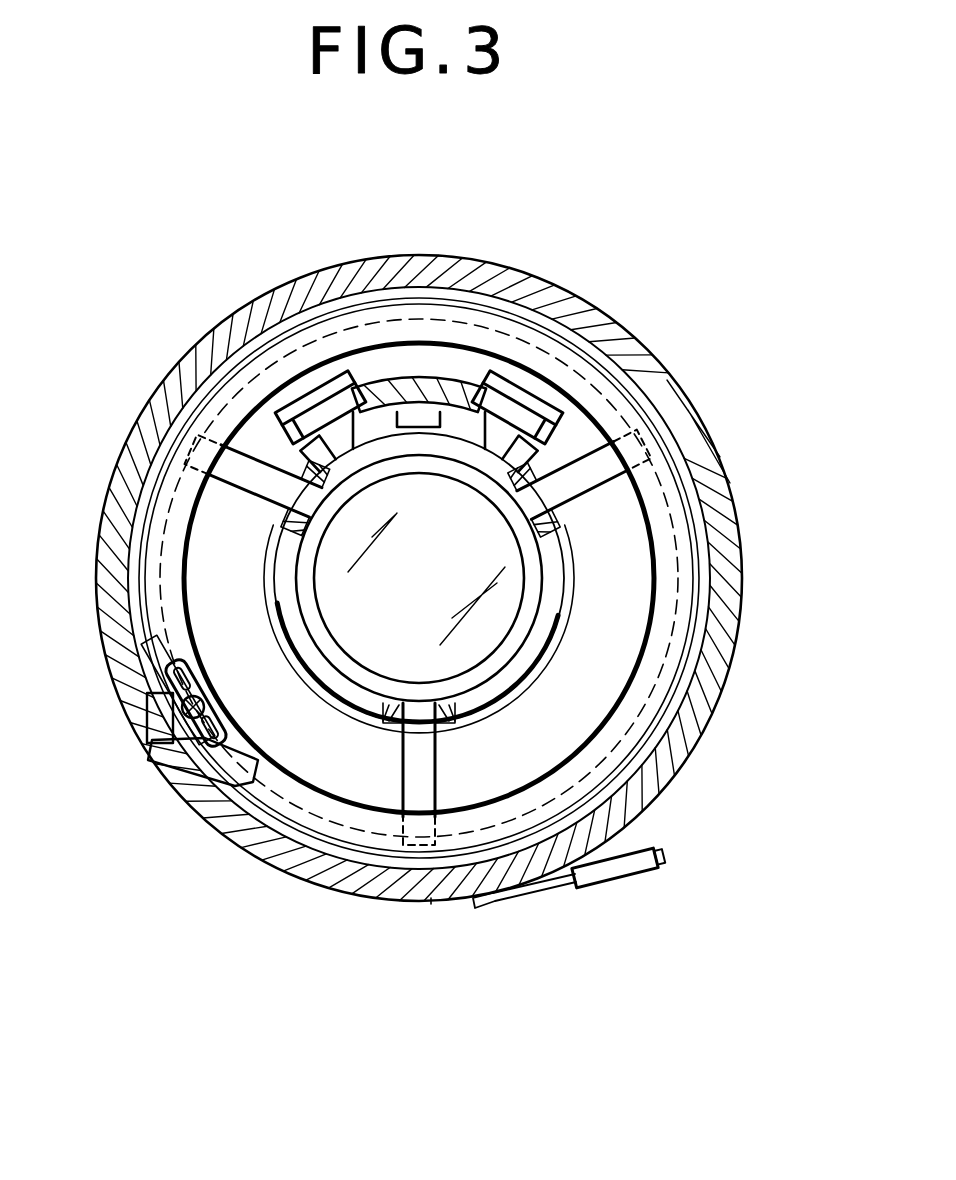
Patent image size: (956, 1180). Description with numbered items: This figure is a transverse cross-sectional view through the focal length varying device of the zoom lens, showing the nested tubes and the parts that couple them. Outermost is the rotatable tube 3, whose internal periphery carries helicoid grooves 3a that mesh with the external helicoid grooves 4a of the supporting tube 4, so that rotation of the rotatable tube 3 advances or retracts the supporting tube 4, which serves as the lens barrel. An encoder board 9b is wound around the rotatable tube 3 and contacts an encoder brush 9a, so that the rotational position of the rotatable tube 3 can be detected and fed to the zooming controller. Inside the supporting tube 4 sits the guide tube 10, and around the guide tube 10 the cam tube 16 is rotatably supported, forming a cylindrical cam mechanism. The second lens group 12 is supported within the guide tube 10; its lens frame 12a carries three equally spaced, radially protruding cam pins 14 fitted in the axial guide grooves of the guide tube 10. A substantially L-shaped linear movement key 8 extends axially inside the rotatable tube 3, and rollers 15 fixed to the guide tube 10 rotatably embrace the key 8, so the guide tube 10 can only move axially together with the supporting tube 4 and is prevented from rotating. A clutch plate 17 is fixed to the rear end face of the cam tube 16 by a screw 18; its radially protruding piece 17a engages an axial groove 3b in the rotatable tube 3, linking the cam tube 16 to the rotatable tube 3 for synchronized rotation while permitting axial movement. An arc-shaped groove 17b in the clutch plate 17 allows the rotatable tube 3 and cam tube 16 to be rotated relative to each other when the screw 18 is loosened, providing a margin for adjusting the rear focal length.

The rotatable tube 3 is at (690, 735).
The helicoid grooves 3a is at (640, 385).
The axial groove 3b is at (150, 728).
The supporting tube 4 is at (628, 742).
The helicoid grooves 4a is at (695, 552).
The linear movement key 8 is at (455, 395).
The encoder brush 9a is at (555, 893).
The encoder board 9b is at (433, 904).
The guide tube 10 is at (548, 652).
The second lens group 12 is at (385, 548).
The lens frame 12a is at (560, 601).
The cam pins 14 is at (248, 488).
The rollers 15 is at (337, 400).
The cam tube 16 is at (658, 654).
The clutch plate 17 is at (175, 652).
The radially protruding piece 17a is at (165, 752).
The arc-shaped groove 17b is at (188, 786).
The screw 18 is at (204, 706).